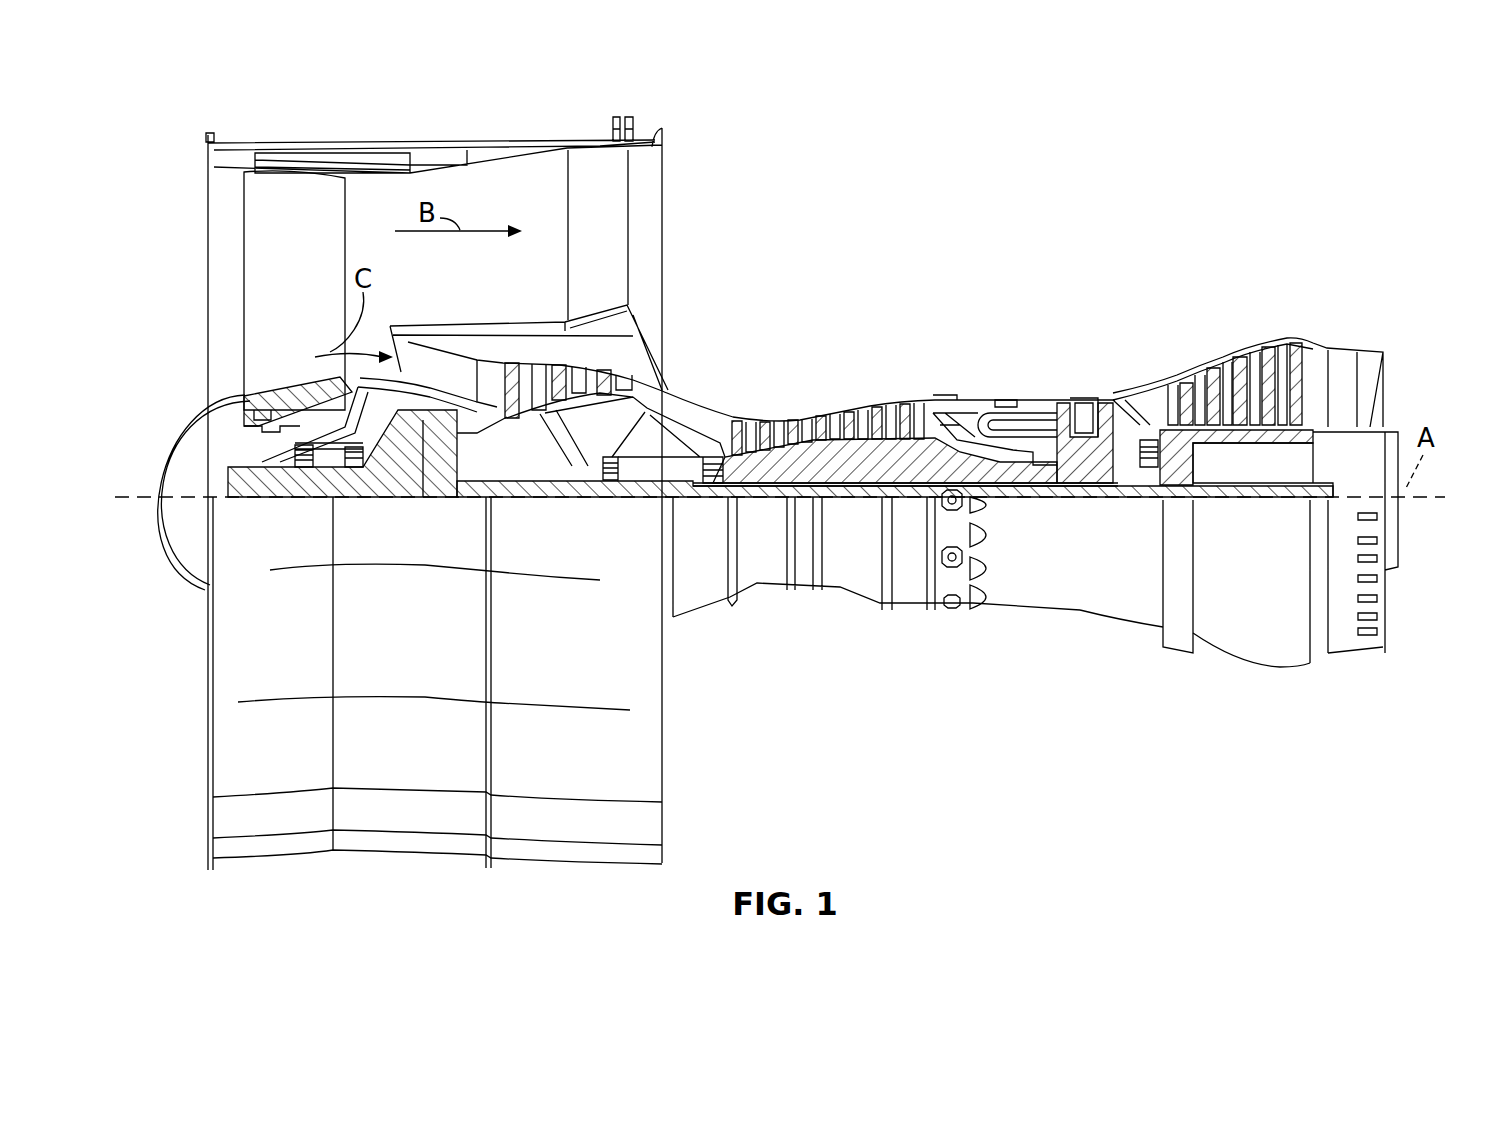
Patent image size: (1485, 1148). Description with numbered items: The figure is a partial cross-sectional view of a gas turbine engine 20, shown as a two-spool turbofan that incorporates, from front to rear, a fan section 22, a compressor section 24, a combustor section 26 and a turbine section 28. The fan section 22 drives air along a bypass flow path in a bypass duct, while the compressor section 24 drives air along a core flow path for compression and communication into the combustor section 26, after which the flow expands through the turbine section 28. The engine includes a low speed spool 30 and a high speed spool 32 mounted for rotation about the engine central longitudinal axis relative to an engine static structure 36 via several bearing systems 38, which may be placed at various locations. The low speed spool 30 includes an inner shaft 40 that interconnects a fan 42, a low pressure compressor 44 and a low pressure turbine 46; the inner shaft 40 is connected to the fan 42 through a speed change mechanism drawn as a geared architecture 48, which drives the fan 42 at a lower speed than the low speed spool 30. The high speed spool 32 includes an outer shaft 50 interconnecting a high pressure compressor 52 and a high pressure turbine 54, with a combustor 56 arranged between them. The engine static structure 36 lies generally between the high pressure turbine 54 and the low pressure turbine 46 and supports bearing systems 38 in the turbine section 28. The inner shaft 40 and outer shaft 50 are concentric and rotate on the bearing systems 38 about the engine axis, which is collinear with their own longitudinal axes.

The gas turbine engine 20 is at (1210, 181).
The fan section 22 is at (297, 111).
The compressor section 24 is at (896, 357).
The combustor section 26 is at (994, 354).
The turbine section 28 is at (1114, 356).
The low speed spool 30 is at (879, 494).
The high speed spool 32 is at (927, 440).
The engine static structure 36 is at (914, 609).
The bearing systems 38 is at (300, 466).
The inner shaft 40 is at (675, 502).
The fan 42 is at (313, 278).
The low pressure compressor 44 is at (573, 363).
The low pressure turbine 46 is at (1243, 363).
The geared architecture 48 is at (433, 467).
The outer shaft 50 is at (1035, 489).
The high pressure compressor 52 is at (832, 413).
The high pressure turbine 54 is at (1097, 398).
The combustor 56 is at (1012, 420).